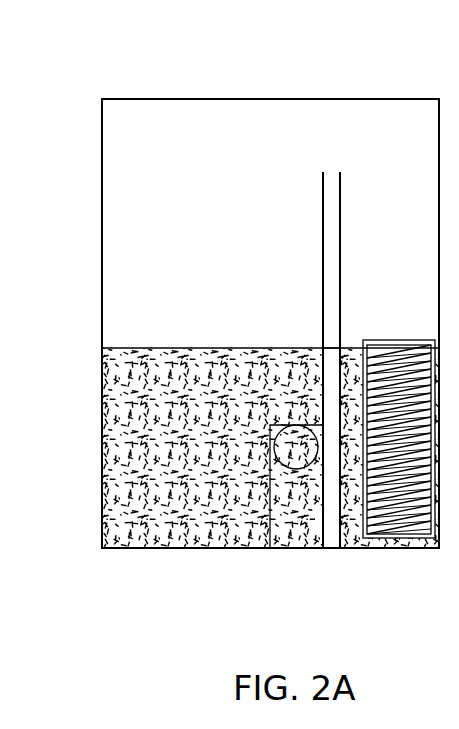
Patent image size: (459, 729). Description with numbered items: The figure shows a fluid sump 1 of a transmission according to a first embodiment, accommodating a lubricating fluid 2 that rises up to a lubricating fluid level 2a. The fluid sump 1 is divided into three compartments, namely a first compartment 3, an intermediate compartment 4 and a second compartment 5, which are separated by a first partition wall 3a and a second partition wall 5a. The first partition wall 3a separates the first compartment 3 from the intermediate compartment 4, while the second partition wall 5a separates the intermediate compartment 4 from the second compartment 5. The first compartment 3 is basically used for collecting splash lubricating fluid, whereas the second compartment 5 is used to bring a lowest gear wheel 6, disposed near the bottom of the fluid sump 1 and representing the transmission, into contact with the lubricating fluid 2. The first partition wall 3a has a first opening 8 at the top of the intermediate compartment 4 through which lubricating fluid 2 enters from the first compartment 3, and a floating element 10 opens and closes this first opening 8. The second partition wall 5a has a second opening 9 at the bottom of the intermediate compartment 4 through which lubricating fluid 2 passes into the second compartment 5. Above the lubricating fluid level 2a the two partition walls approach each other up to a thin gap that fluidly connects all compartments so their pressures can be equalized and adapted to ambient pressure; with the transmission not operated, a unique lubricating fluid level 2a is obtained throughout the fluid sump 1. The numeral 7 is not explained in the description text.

The fluid sump 1 is at (100, 380).
The lubricating fluid 2 is at (110, 441).
The lubricating fluid level 2a is at (216, 346).
The first compartment 3 is at (138, 549).
The first partition wall 3a is at (252, 549).
The intermediate compartment 4 is at (285, 545).
The second compartment 5 is at (352, 543).
The second partition wall 5a is at (340, 222).
The lowest gear wheel 6 is at (400, 343).
The gas passage 7 is at (333, 190).
The first opening 8 is at (313, 423).
The second opening 9 is at (328, 543).
The floating element 10 is at (300, 425).